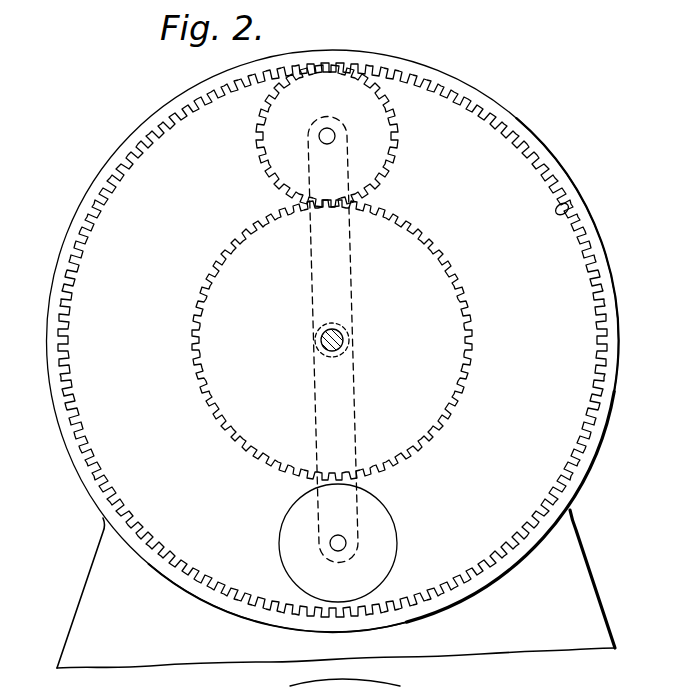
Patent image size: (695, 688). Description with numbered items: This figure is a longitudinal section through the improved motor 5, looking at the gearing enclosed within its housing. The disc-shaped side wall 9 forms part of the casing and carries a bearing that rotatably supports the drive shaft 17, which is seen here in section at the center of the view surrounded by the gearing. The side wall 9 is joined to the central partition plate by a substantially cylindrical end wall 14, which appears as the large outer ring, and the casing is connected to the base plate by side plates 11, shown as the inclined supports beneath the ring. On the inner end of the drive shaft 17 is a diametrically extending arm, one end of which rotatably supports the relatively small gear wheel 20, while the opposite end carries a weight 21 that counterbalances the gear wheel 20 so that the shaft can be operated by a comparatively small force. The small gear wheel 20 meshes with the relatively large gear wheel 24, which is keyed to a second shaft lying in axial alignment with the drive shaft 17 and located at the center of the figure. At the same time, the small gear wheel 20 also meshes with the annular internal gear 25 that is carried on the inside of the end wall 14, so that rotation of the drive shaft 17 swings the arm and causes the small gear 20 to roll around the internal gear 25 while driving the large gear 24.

The improved motor 5 is at (466, 123).
The cylindrical end wall 14 is at (542, 143).
The annular internal gear 25 is at (568, 215).
The side wall 9 is at (568, 293).
The relatively large gear wheel 24 is at (433, 297).
The drive shaft 17 is at (343, 345).
The relatively small gear wheel 20 is at (382, 142).
The weight 21 is at (387, 545).
The side plates 11 is at (572, 583).